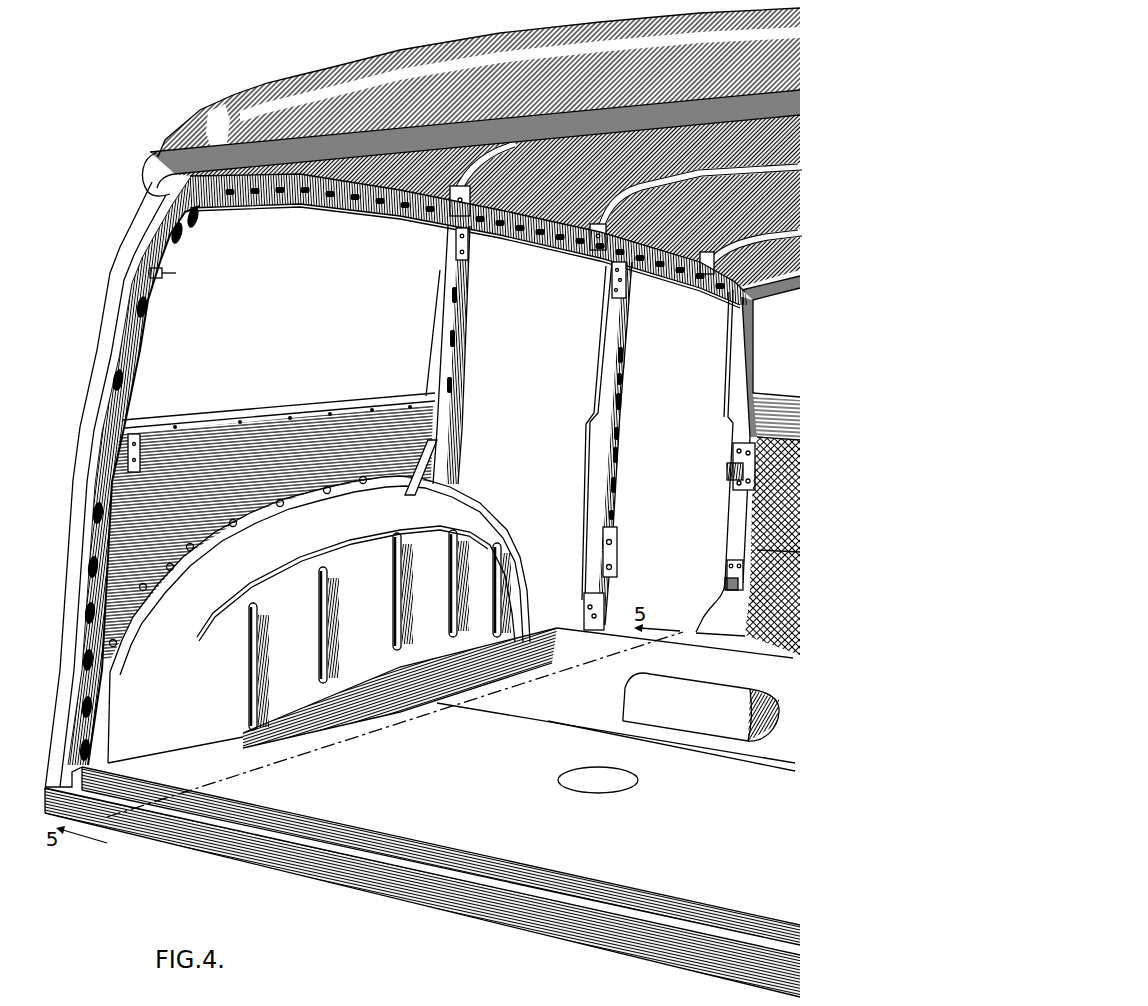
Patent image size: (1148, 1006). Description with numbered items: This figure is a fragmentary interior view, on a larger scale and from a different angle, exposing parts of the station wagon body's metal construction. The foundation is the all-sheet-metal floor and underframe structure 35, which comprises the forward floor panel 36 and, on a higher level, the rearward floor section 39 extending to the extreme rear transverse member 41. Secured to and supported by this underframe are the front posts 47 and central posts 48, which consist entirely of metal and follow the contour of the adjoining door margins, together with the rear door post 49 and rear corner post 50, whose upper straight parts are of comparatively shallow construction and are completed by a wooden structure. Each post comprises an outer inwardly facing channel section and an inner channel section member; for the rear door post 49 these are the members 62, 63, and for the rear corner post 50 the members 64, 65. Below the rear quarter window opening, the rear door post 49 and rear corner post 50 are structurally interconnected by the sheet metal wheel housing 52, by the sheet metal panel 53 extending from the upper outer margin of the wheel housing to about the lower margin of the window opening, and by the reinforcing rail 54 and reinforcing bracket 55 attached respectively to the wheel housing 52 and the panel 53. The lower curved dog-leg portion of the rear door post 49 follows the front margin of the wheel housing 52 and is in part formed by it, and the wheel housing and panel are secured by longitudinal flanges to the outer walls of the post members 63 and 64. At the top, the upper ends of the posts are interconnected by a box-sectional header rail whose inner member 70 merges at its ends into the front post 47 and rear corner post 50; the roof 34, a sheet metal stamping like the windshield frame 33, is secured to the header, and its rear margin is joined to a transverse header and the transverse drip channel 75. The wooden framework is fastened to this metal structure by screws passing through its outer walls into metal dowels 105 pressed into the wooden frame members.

The windshield frame 33 is at (755, 368).
The roof 34 is at (372, 52).
The floor and underframe structure 35 is at (501, 847).
The forward floor panel 36 is at (768, 634).
The rearward floor section 39 is at (670, 866).
The extreme rear transverse member 41 is at (578, 938).
The front post 47 is at (735, 403).
The central post 48 is at (594, 378).
The rear door post 49 is at (467, 346).
The rear corner post 50 is at (112, 277).
The wheel housing 52 is at (343, 597).
The sheet metal panel 53 is at (292, 428).
The reinforcing rail 54 is at (200, 560).
The reinforcing bracket 55 is at (413, 494).
The outer channel section of rear door post 62 is at (441, 277).
The inner channel section member of rear door post 63 is at (461, 270).
The outer channel section of rear corner post 64 is at (103, 357).
The inner channel section member of rear corner post 65 is at (110, 437).
The inner header rail member 70 is at (378, 212).
The transverse drip channel 75 is at (148, 157).
The metal dowel 105 is at (241, 410).